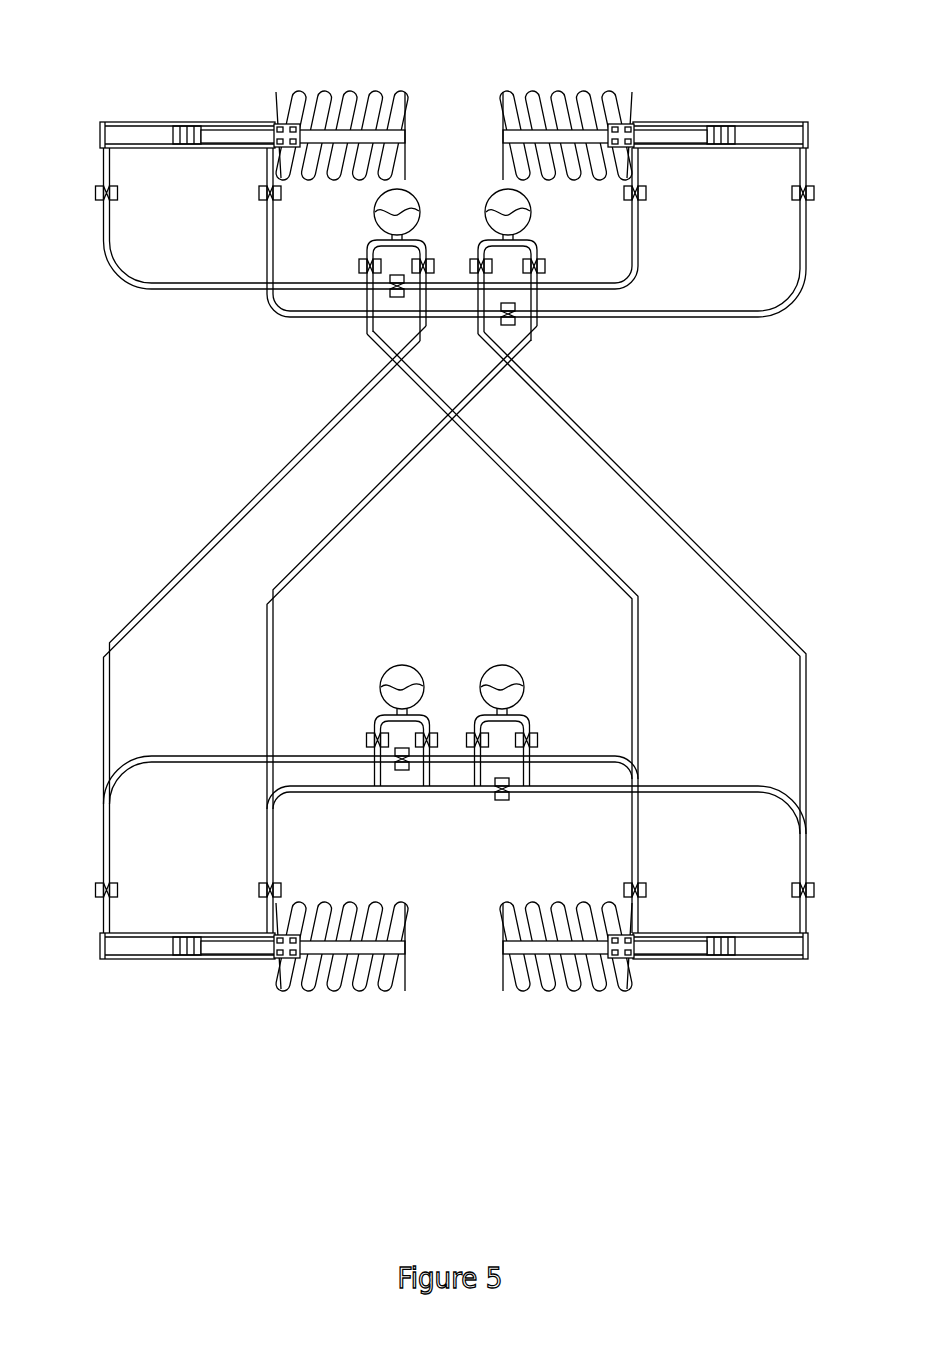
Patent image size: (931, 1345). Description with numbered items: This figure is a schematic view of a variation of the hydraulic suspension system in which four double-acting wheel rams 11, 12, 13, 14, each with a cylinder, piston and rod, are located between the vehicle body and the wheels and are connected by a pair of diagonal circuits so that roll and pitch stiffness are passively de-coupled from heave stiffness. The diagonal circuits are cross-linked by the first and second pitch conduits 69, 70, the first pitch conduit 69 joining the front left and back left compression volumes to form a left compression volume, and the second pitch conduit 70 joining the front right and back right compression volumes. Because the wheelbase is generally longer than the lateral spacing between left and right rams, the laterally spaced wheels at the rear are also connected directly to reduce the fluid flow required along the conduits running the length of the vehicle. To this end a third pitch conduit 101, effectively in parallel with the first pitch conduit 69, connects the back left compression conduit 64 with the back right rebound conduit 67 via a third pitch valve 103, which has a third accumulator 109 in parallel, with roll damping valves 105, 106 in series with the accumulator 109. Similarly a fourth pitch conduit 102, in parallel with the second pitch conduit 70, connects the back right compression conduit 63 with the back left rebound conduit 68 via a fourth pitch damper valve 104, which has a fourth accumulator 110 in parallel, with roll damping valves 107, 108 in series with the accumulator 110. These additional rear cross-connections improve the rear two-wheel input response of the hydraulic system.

The wheel ram 11 is at (178, 80).
The wheel ram 12 is at (725, 80).
The wheel ram 13 is at (710, 1012).
The wheel ram 14 is at (185, 1012).
The back right compression conduit 63 is at (801, 858).
The back left compression conduit 64 is at (108, 858).
The back right rebound conduit 67 is at (638, 858).
The back left rebound conduit 68 is at (268, 858).
The first pitch conduit 69 is at (388, 288).
The second pitch conduit 70 is at (520, 318).
The third pitch conduit 101 is at (338, 764).
The fourth pitch conduit 102 is at (550, 792).
The third pitch valve 103 is at (404, 770).
The fourth pitch damper valve 104 is at (498, 798).
The roll damping valve 105 is at (368, 737).
The roll damping valve 106 is at (431, 737).
The roll damping valve 107 is at (474, 738).
The roll damping valve 108 is at (534, 740).
The third accumulator 109 is at (403, 675).
The fourth accumulator 110 is at (500, 673).